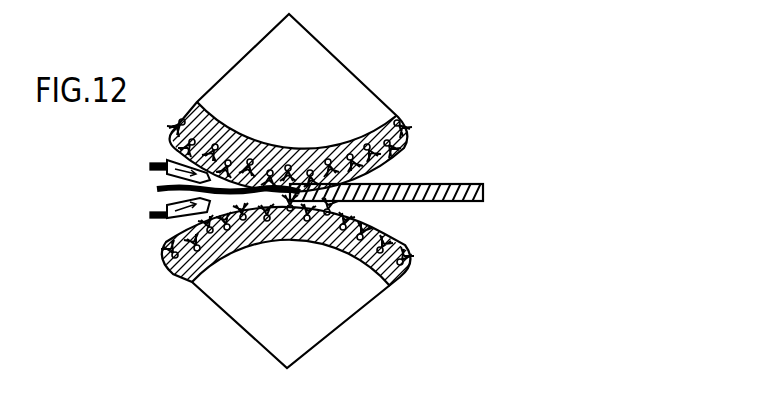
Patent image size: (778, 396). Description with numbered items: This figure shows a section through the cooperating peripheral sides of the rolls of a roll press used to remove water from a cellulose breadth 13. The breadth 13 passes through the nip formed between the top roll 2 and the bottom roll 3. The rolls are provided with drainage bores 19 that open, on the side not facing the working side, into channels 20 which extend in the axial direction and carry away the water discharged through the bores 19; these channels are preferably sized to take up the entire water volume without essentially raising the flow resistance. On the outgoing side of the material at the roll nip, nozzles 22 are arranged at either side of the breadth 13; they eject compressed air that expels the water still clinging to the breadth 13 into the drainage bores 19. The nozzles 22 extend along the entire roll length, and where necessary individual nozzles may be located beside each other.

The top roll 2 is at (383, 125).
The bottom roll 3 is at (397, 282).
The cellulose breadth 13 is at (457, 203).
The drainage bores 19 is at (397, 150).
The channels 20 is at (217, 127).
The nozzles 22 is at (152, 170).